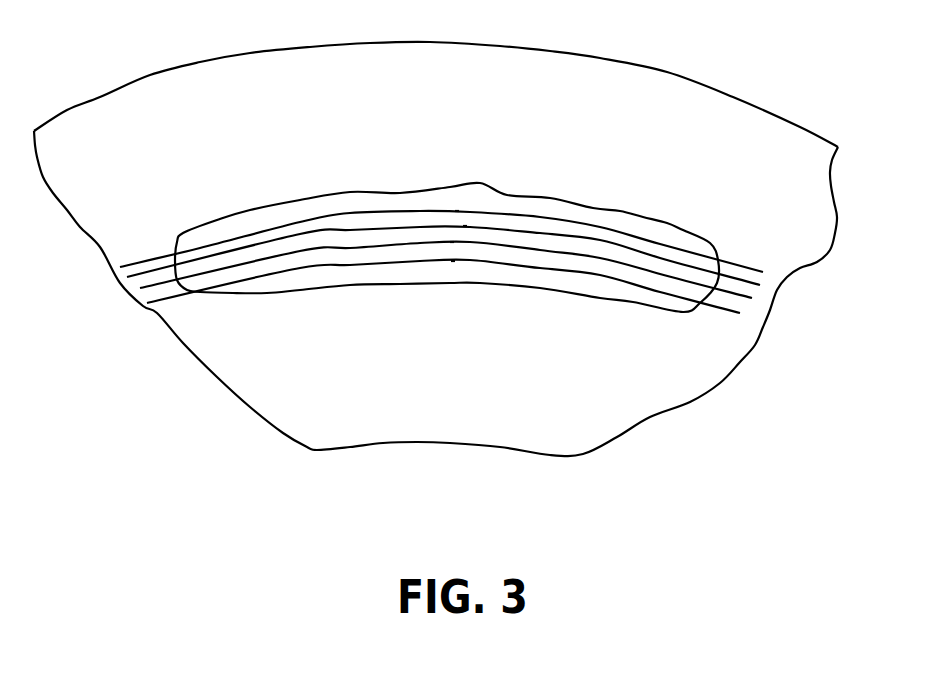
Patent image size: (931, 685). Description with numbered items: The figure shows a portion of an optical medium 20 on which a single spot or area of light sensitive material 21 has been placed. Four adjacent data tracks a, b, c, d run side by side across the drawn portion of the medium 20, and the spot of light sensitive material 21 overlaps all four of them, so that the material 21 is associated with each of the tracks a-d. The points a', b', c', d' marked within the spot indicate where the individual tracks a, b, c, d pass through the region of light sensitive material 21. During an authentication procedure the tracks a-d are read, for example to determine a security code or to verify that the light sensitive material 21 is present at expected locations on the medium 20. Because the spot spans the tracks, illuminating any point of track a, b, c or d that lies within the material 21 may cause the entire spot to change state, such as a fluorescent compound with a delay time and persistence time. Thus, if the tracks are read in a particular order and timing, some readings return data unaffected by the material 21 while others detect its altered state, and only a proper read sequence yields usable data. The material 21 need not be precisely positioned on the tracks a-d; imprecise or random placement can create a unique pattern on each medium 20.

The medium 20 is at (650, 98).
The light sensitive material 21 is at (668, 225).
The track a is at (450, 245).
The track b is at (450, 261).
The track c is at (450, 277).
The track d is at (449, 294).
The point a' on curve a a' is at (457, 152).
The point b' on curve b b' is at (510, 177).
The point c' on curve c c' is at (415, 191).
The point d' on curve d d' is at (459, 312).